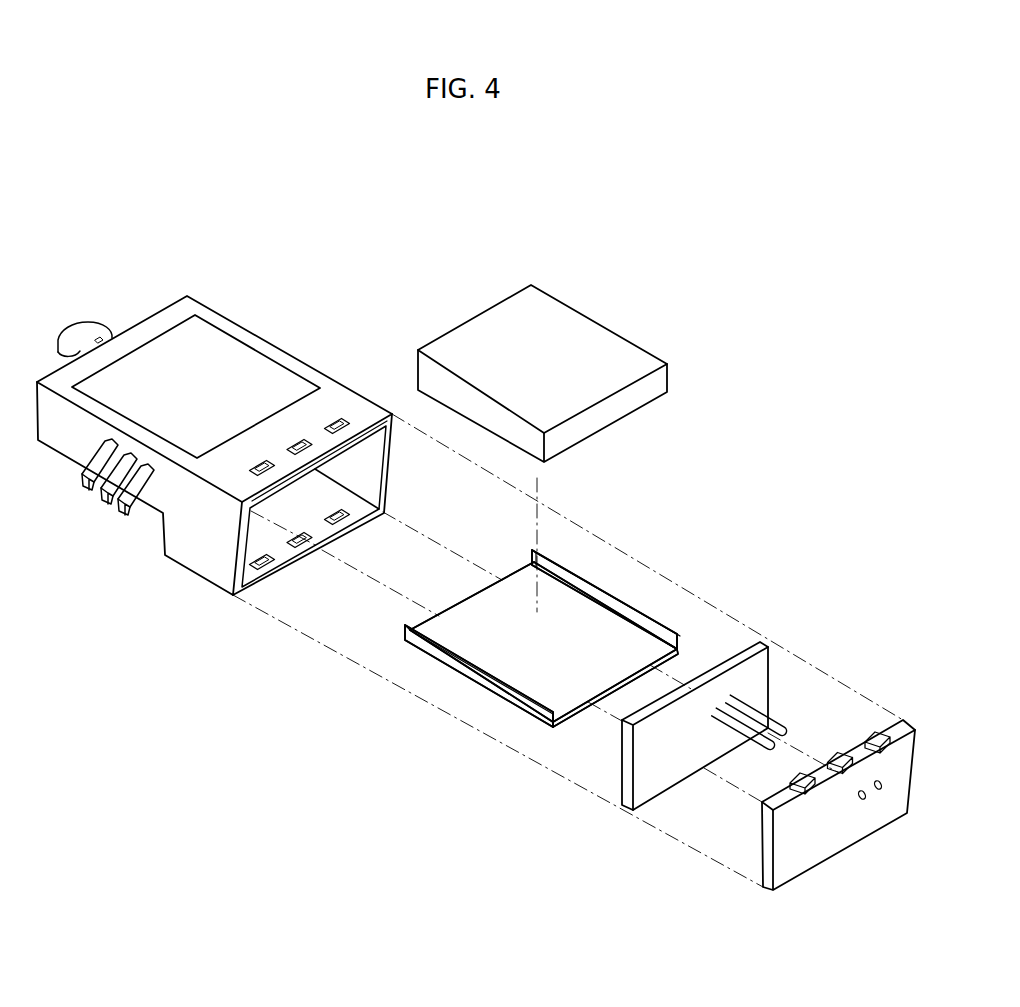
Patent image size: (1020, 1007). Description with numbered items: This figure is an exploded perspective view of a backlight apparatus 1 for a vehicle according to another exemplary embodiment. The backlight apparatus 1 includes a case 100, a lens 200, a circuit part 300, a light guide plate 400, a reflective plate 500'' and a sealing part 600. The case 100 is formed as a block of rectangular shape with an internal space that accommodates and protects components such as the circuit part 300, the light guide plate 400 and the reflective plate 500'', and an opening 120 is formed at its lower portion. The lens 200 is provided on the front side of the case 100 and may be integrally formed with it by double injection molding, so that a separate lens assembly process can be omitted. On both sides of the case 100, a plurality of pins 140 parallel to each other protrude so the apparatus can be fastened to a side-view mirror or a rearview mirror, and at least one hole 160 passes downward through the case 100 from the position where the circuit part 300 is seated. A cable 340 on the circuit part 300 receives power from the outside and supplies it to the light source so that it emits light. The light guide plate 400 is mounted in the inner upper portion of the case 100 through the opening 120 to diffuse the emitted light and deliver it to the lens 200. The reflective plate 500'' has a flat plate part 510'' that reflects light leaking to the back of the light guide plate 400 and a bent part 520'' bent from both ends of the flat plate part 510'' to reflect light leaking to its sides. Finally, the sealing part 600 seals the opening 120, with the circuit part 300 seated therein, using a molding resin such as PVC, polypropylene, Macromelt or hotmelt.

The backlight apparatus 1 is at (141, 190).
The case 100 is at (188, 307).
The opening 120 is at (258, 550).
The pins 140 is at (102, 496).
The hole 160 is at (337, 420).
The lens 200 is at (233, 363).
The circuit part 300 is at (742, 653).
The cable 340 is at (774, 720).
The light guide plate 400 is at (583, 338).
The reflective plate 500'' is at (604, 524).
The flat plate part 510'' is at (584, 558).
The bent part 520'' is at (617, 558).
The sealing part 600 is at (895, 727).